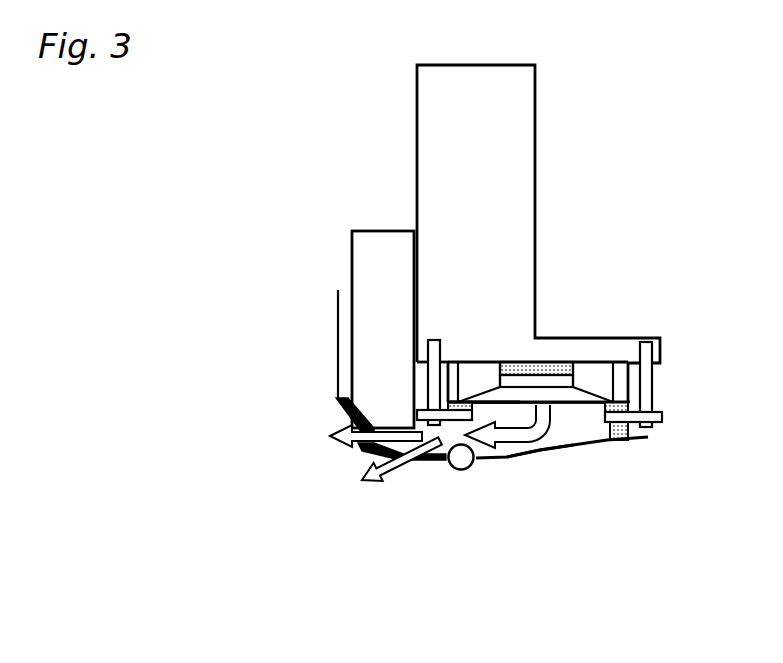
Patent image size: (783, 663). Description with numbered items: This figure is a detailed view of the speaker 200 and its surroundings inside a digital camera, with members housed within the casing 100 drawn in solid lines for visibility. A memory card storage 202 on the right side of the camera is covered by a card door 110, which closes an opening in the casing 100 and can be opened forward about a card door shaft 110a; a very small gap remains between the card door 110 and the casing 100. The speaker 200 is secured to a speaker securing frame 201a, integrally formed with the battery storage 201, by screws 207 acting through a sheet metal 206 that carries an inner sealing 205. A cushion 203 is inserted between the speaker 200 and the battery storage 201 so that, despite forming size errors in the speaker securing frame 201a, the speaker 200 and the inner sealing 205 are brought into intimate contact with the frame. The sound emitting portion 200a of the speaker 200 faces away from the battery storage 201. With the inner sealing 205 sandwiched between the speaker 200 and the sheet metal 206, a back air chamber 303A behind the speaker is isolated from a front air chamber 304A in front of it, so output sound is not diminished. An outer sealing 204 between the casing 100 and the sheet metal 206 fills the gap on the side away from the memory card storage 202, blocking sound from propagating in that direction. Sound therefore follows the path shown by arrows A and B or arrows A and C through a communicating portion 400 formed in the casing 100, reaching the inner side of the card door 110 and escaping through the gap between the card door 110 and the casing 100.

The casing 100 is at (338, 327).
The card door 110 is at (375, 458).
The card door shaft 110a is at (460, 471).
The speaker 200 is at (577, 418).
The sound emitting portion 200a is at (500, 404).
The battery storage 201 is at (535, 152).
The speaker securing frame 201a is at (447, 368).
The memory card storage 202 is at (378, 231).
The cushion 203 is at (548, 364).
The outer sealing 204 is at (624, 441).
The inner sealing 205 is at (462, 402).
The sheet metal 206 is at (466, 418).
The screws 207 is at (455, 425).
The back air chamber 303A is at (593, 375).
The front air chamber 304A is at (562, 412).
The communicating portion 400 is at (537, 449).
The arrow A is at (522, 444).
The arrow B is at (342, 438).
The arrow C is at (365, 480).